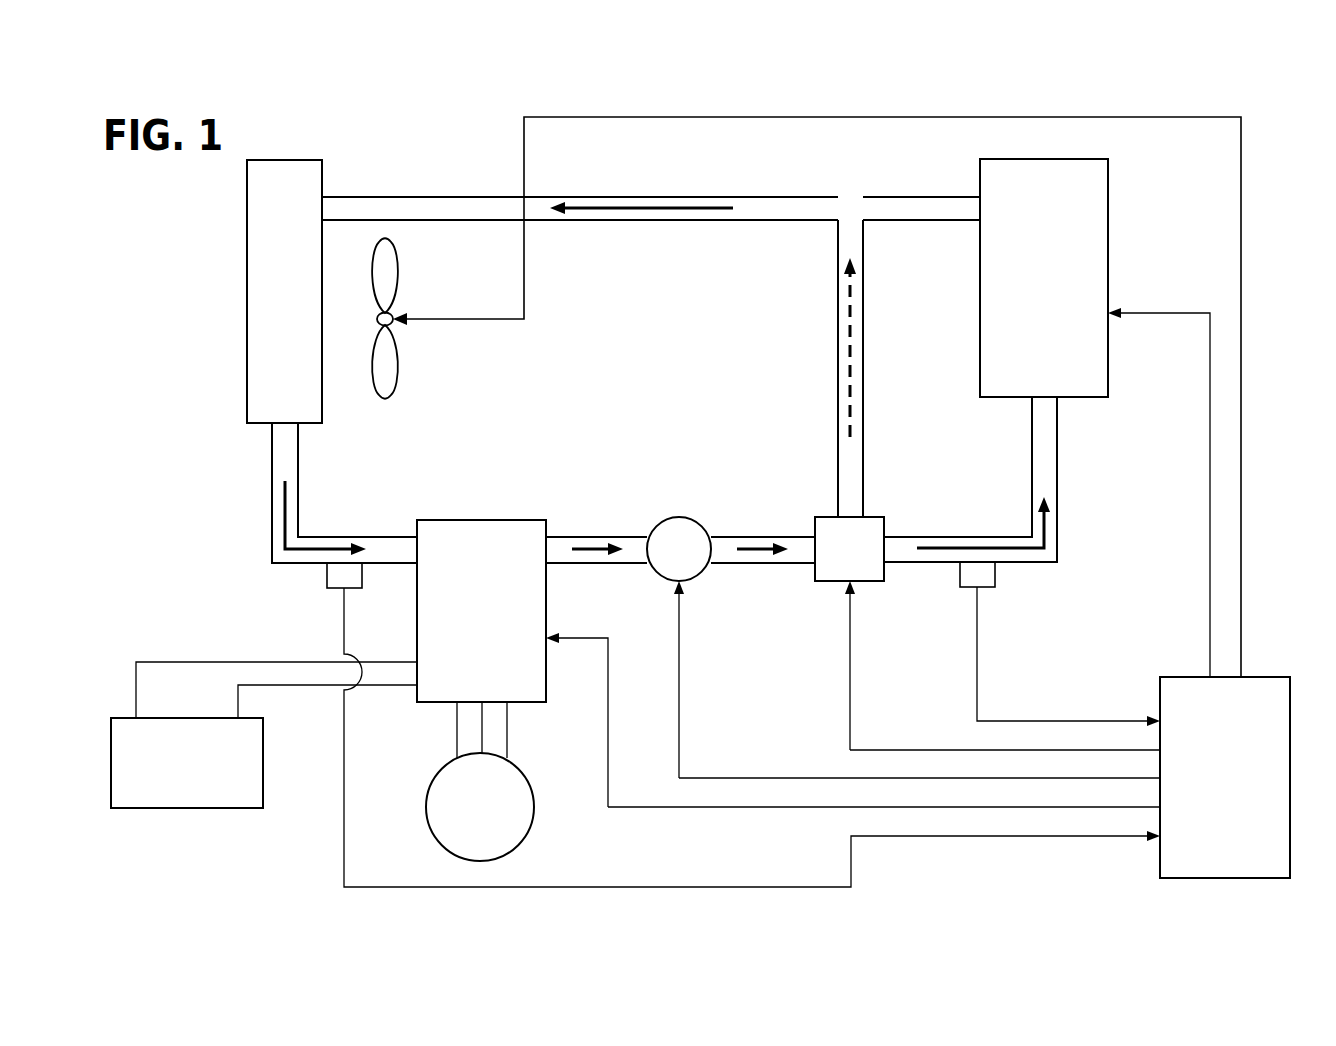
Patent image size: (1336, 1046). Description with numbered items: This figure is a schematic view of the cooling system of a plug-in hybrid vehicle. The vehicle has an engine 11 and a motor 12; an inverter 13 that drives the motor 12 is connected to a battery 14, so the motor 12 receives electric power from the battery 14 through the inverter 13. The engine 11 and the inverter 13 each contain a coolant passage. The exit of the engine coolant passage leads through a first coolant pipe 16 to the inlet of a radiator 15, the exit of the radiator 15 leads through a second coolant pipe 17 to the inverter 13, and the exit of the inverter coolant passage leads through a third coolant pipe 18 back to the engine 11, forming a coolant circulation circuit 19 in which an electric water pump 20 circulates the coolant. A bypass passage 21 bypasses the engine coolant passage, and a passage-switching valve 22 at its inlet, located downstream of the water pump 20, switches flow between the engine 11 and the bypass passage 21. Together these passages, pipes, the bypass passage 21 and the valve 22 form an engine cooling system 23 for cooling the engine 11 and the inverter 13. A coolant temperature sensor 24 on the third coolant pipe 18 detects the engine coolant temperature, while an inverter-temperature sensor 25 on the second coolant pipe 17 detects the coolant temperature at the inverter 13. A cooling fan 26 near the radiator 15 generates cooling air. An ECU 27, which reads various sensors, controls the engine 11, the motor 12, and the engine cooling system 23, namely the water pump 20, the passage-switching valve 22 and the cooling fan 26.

The engine 11 is at (1108, 213).
The motor 12 is at (538, 807).
The inverter 13 is at (480, 520).
The battery 14 is at (187, 808).
The radiator 15 is at (247, 278).
The first coolant pipe 16 is at (650, 197).
The second coolant pipe 17 is at (272, 500).
The third coolant pipe 18 is at (767, 537).
The coolant circulation circuit 19 is at (711, 195).
The electric water pump 20 is at (679, 517).
The bypass passage 21 is at (838, 360).
The passage-switching valve 22 is at (878, 512).
The engine cooling system 23 is at (466, 174).
The coolant temperature sensor 24 is at (995, 575).
The inverter-temperature sensor 25 is at (327, 575).
The cooling fan 26 is at (397, 363).
The ECU 27 is at (1265, 677).